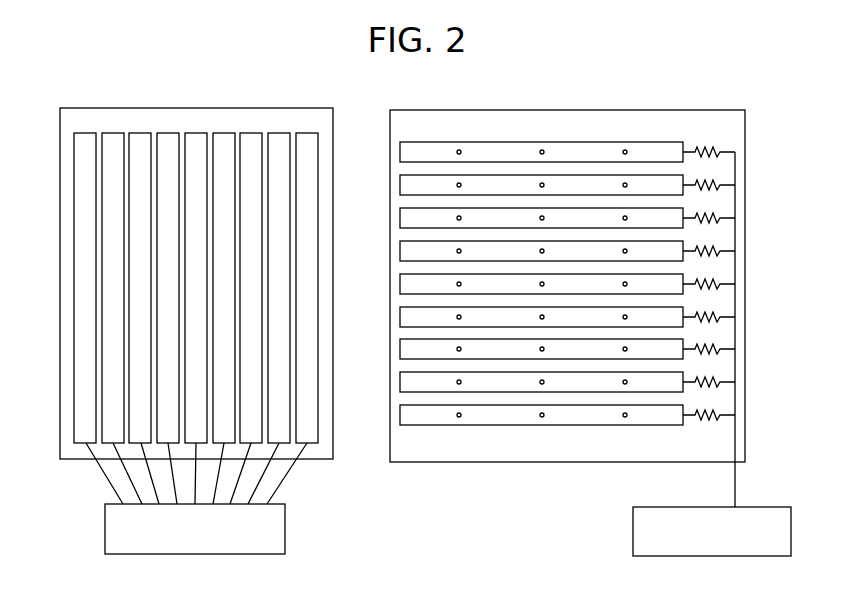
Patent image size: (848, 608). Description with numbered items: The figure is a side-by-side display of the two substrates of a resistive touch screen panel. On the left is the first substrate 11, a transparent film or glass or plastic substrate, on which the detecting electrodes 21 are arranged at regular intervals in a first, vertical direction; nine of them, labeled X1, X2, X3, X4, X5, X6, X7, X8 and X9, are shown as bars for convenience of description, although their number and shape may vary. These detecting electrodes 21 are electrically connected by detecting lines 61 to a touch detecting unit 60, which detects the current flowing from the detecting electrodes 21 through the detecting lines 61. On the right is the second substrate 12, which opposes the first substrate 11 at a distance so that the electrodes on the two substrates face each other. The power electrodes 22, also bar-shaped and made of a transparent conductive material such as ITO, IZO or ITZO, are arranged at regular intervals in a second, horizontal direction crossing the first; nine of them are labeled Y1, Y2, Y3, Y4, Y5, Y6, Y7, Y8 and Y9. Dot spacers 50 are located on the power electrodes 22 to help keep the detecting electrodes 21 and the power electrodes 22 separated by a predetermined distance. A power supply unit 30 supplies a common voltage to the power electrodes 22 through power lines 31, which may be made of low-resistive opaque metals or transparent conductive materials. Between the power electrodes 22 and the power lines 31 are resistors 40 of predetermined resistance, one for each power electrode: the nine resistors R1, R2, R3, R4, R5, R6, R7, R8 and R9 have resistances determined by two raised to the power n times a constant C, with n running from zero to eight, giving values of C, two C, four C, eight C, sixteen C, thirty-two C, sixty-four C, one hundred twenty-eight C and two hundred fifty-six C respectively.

The first substrate 11 is at (60, 282).
The detecting electrodes 21 is at (196, 257).
The detecting electrode X1 is at (307, 278).
The detecting electrode X2 is at (279, 278).
The detecting electrode X3 is at (251, 278).
The detecting electrode X4 is at (224, 278).
The detecting electrode X5 is at (196, 278).
The detecting electrode X6 is at (168, 278).
The detecting electrode X7 is at (140, 278).
The detecting electrode X8 is at (113, 278).
The detecting electrode X9 is at (85, 278).
The detecting lines 61 is at (102, 479).
The touch detecting unit 60 is at (195, 555).
The second substrate 12 is at (746, 446).
The power electrodes 22 is at (510, 251).
The power electrode Y1 is at (524, 117).
The power electrode Y2 is at (524, 185).
The power electrode Y3 is at (524, 218).
The power electrode Y4 is at (524, 251).
The power electrode Y5 is at (524, 284).
The power electrode Y6 is at (524, 317).
The power electrode Y7 is at (524, 349).
The power electrode Y8 is at (524, 382).
The power electrode Y9 is at (524, 415).
The dot spacers 50 is at (460, 150).
The resistors 40 is at (748, 277).
The resistor R1 is at (718, 148).
The resistor R2 is at (718, 181).
The resistor R3 is at (718, 214).
The resistor R4 is at (718, 247).
The resistor R5 is at (718, 280).
The resistor R6 is at (718, 313).
The resistor R7 is at (718, 345).
The resistor R8 is at (718, 378).
The resistor R9 is at (730, 411).
The power lines 31 is at (736, 483).
The power supply unit 30 is at (712, 557).